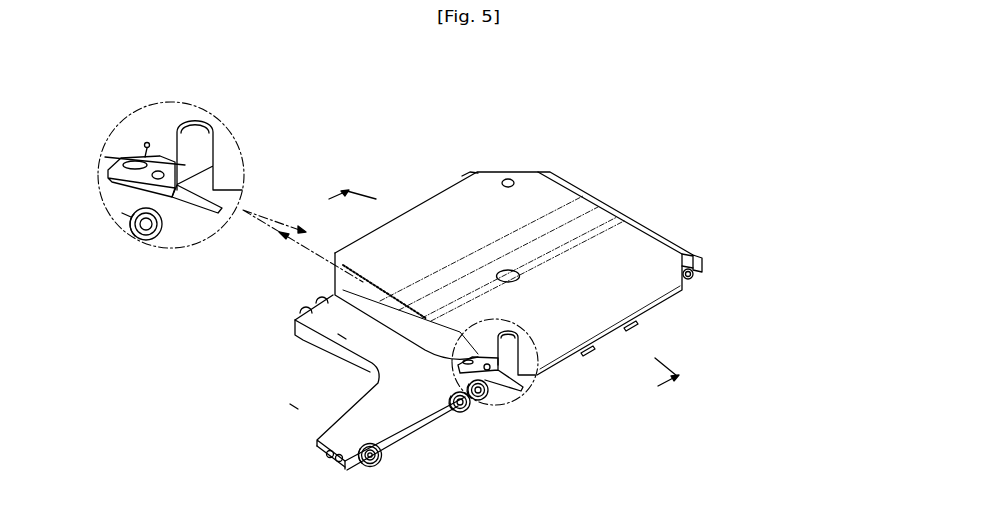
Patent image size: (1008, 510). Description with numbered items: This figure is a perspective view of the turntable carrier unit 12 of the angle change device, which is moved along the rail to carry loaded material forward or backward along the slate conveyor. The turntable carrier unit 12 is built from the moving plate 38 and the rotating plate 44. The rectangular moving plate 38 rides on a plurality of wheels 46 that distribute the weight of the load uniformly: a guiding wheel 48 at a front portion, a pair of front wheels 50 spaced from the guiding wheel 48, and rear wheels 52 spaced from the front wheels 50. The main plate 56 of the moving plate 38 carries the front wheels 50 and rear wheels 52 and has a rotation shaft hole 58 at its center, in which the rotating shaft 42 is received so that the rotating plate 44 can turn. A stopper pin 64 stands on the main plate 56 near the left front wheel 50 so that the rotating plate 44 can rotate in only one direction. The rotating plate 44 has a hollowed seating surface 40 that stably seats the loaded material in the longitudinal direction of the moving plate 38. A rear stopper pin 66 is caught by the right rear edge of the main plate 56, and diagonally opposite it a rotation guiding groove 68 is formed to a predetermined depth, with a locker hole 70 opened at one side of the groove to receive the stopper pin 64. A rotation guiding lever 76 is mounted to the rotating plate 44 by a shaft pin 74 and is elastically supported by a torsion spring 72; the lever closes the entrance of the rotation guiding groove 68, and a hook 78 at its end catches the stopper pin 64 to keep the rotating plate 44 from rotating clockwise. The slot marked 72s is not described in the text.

The turntable carrier unit 12 is at (632, 96).
The moving plate 38 is at (290, 404).
The seating surface 40 is at (578, 213).
The rotating shaft 42 is at (506, 270).
The rotating plate 44 is at (467, 172).
The wheels 46 is at (480, 468).
The guiding wheel 48 is at (383, 458).
The front wheels 50 is at (485, 410).
The rear wheels 52 is at (689, 284).
The main plate 56 is at (338, 334).
The rotation shaft hole 58 is at (345, 418).
The stopper pin 64 is at (107, 176).
The rear stopper pin 66 is at (508, 178).
The rotation guiding groove 68 is at (218, 127).
The locker hole 70 is at (148, 143).
The torsion spring 72 is at (166, 240).
The slot 72s is at (141, 153).
The shaft pin 74 is at (113, 199).
The rotation guiding lever 76 is at (222, 213).
The hook 78 is at (105, 157).